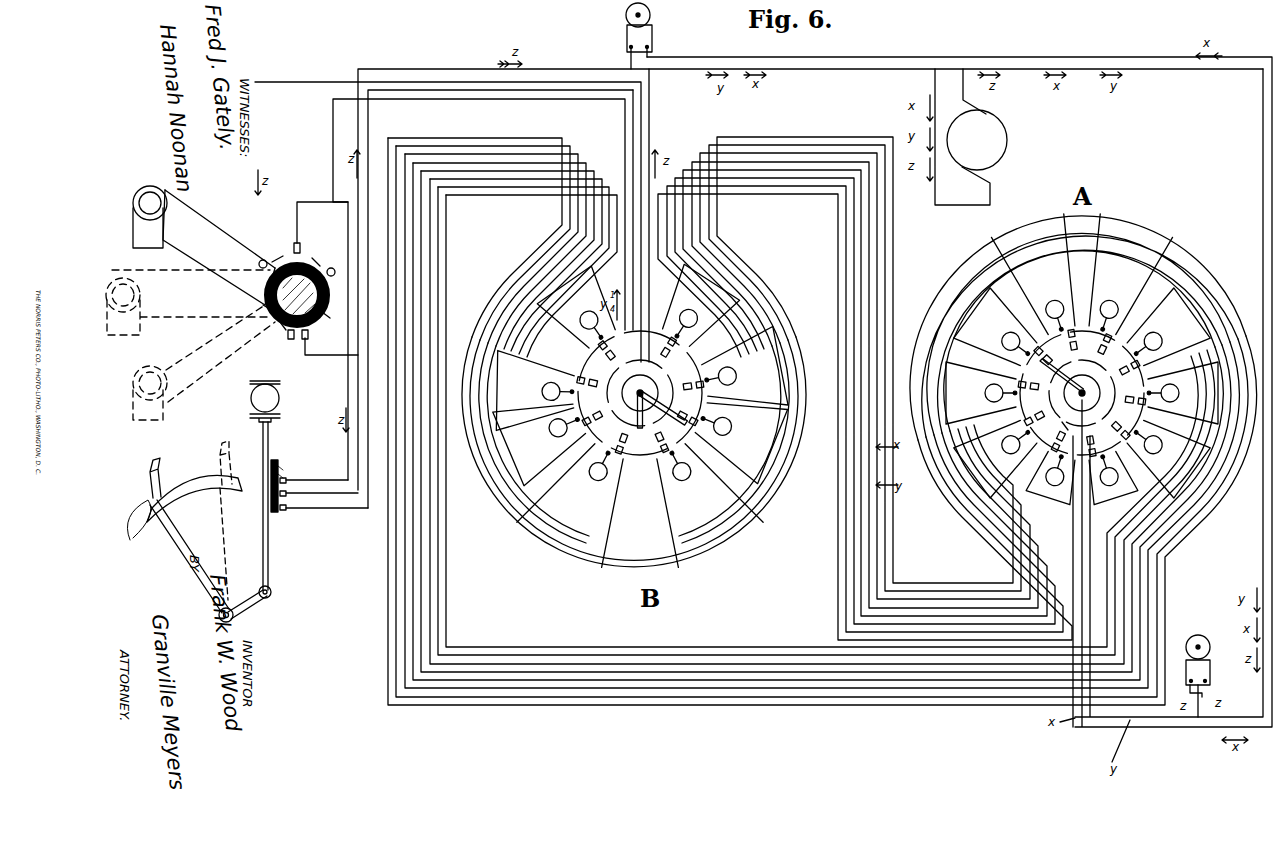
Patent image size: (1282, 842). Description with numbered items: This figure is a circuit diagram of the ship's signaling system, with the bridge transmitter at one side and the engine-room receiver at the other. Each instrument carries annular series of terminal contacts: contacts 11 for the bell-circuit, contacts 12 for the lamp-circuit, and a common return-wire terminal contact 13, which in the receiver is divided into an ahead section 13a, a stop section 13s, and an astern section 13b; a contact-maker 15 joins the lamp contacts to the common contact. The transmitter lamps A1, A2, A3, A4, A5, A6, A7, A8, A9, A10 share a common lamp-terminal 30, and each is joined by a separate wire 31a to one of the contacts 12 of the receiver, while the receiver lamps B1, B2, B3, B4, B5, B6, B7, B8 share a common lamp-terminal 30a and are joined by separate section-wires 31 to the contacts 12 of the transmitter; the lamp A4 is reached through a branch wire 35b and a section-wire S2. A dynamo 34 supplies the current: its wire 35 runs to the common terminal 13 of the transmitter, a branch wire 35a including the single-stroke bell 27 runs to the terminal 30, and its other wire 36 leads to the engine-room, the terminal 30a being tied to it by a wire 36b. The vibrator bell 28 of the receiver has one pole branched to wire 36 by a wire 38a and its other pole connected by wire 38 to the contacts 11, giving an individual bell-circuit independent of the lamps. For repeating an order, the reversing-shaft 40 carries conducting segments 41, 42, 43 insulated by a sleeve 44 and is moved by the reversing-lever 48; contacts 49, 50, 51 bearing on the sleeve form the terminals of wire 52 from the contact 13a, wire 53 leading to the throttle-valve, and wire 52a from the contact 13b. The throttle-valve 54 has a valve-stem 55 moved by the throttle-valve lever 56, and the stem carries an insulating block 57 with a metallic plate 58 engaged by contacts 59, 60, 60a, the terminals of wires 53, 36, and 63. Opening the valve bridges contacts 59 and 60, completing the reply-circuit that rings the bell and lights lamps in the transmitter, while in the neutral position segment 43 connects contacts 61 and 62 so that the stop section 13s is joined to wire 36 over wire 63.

The bell-circuit terminal contacts 11 is at (1064, 423).
The lamp-circuit terminal contacts 12 is at (666, 343).
The common return-wire terminal contact 13 is at (1080, 392).
The ahead section of common contact 13a is at (692, 401).
The astern section of common contact 13b is at (600, 393).
The stop section of common contact 13s is at (645, 430).
The contact-maker 15 is at (861, 393).
The electric bell 27 is at (1208, 667).
The bell 28 is at (652, 42).
The common lamp-terminal 30 is at (1089, 298).
The common lamp-terminal of receiver 30a is at (657, 470).
The section-wire 31 is at (772, 145).
The section-wire 31a is at (856, 150).
The dynamo 34 is at (971, 137).
The dynamo wire 35 is at (1197, 69).
The branch wire 35a is at (1203, 686).
The branch wire 35b is at (1040, 310).
The dynamo wire 36 is at (372, 70).
The wire 36b is at (631, 152).
The bell wire 38 is at (722, 58).
The branch wire 38a is at (630, 57).
The reversing-shaft 40 is at (297, 295).
The conducting segment 41 is at (277, 261).
The conducting segment 42 is at (335, 317).
The conducting segment 43 is at (283, 326).
The insulating sleeve 44 is at (315, 260).
The reversing-lever 48 is at (214, 222).
The contact 49 is at (260, 264).
The contact 50 is at (300, 250).
The contact 51 is at (334, 272).
The wire 52 is at (305, 78).
The wire 52a is at (333, 150).
The wire 53 is at (322, 196).
The throttle-valve 54 is at (280, 403).
The valve-stem 55 is at (270, 572).
The throttle-valve lever 56 is at (178, 550).
The insulating block 57 is at (278, 460).
The metallic plate 58 is at (283, 470).
The contact 59 is at (287, 480).
The contact 60 is at (287, 493).
The contact 60a is at (284, 510).
The contact 61 is at (290, 340).
The contact 62 is at (308, 335).
The wire 63 is at (628, 122).
The transmitter lamp A1 is at (1001, 444).
The transmitter lamp A2 is at (990, 390).
The transmitter lamp A3 is at (1010, 333).
The transmitter lamp A4 is at (1053, 299).
The transmitter lamp A5 is at (1115, 301).
The transmitter lamp A6 is at (1158, 332).
The transmitter lamp A7 is at (1176, 385).
The transmitter lamp A8 is at (1164, 443).
The transmitter lamp A9 is at (1055, 480).
The transmitter lamp A10 is at (1119, 479).
The receiver lamp B1 is at (706, 324).
The receiver lamp B2 is at (737, 372).
The receiver lamp B3 is at (730, 432).
The receiver lamp B4 is at (683, 484).
The receiver lamp B5 is at (604, 485).
The receiver lamp B6 is at (556, 441).
The receiver lamp B7 is at (548, 375).
The receiver lamp B8 is at (575, 326).
The section-wire S2 is at (750, 498).